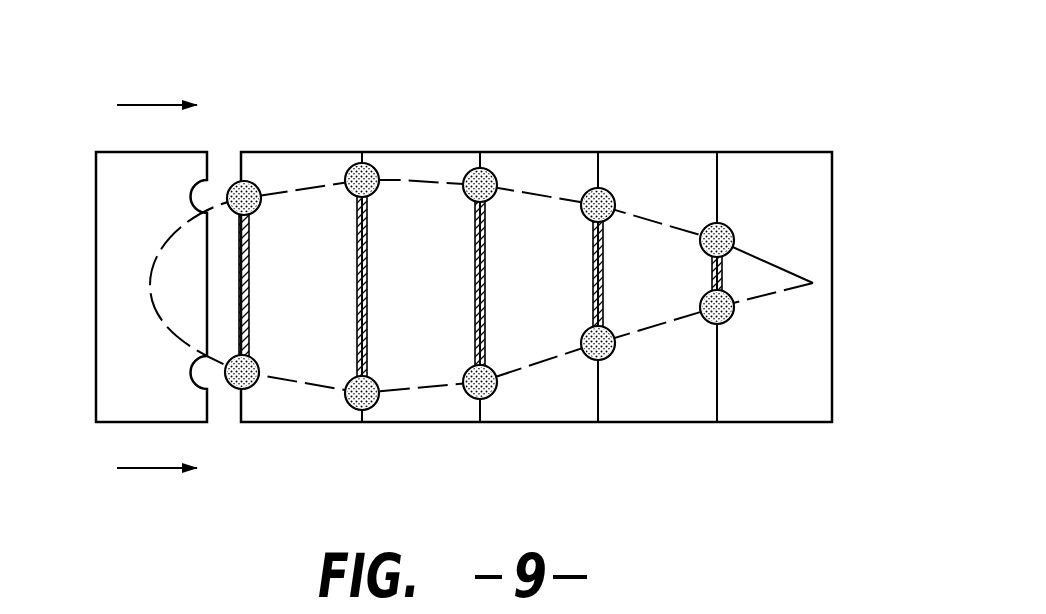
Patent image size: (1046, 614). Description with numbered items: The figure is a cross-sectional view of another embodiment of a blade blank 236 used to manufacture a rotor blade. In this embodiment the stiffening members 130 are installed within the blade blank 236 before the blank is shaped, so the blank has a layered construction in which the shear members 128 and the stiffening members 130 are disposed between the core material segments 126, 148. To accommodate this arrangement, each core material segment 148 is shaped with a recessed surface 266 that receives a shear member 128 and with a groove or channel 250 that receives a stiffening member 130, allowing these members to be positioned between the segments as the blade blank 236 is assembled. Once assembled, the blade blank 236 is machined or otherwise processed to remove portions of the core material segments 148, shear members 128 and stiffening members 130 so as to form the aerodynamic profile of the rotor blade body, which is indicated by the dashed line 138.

The component body 126 is at (454, 336).
The core material segments 148 is at (122, 410).
The shear members 128 is at (356, 250).
The stiffening members 130 is at (232, 183).
The dashed line 138 is at (401, 180).
The blade blank 236 is at (619, 88).
The groove or channel 250 is at (195, 193).
The recessed surface 266 is at (203, 260).